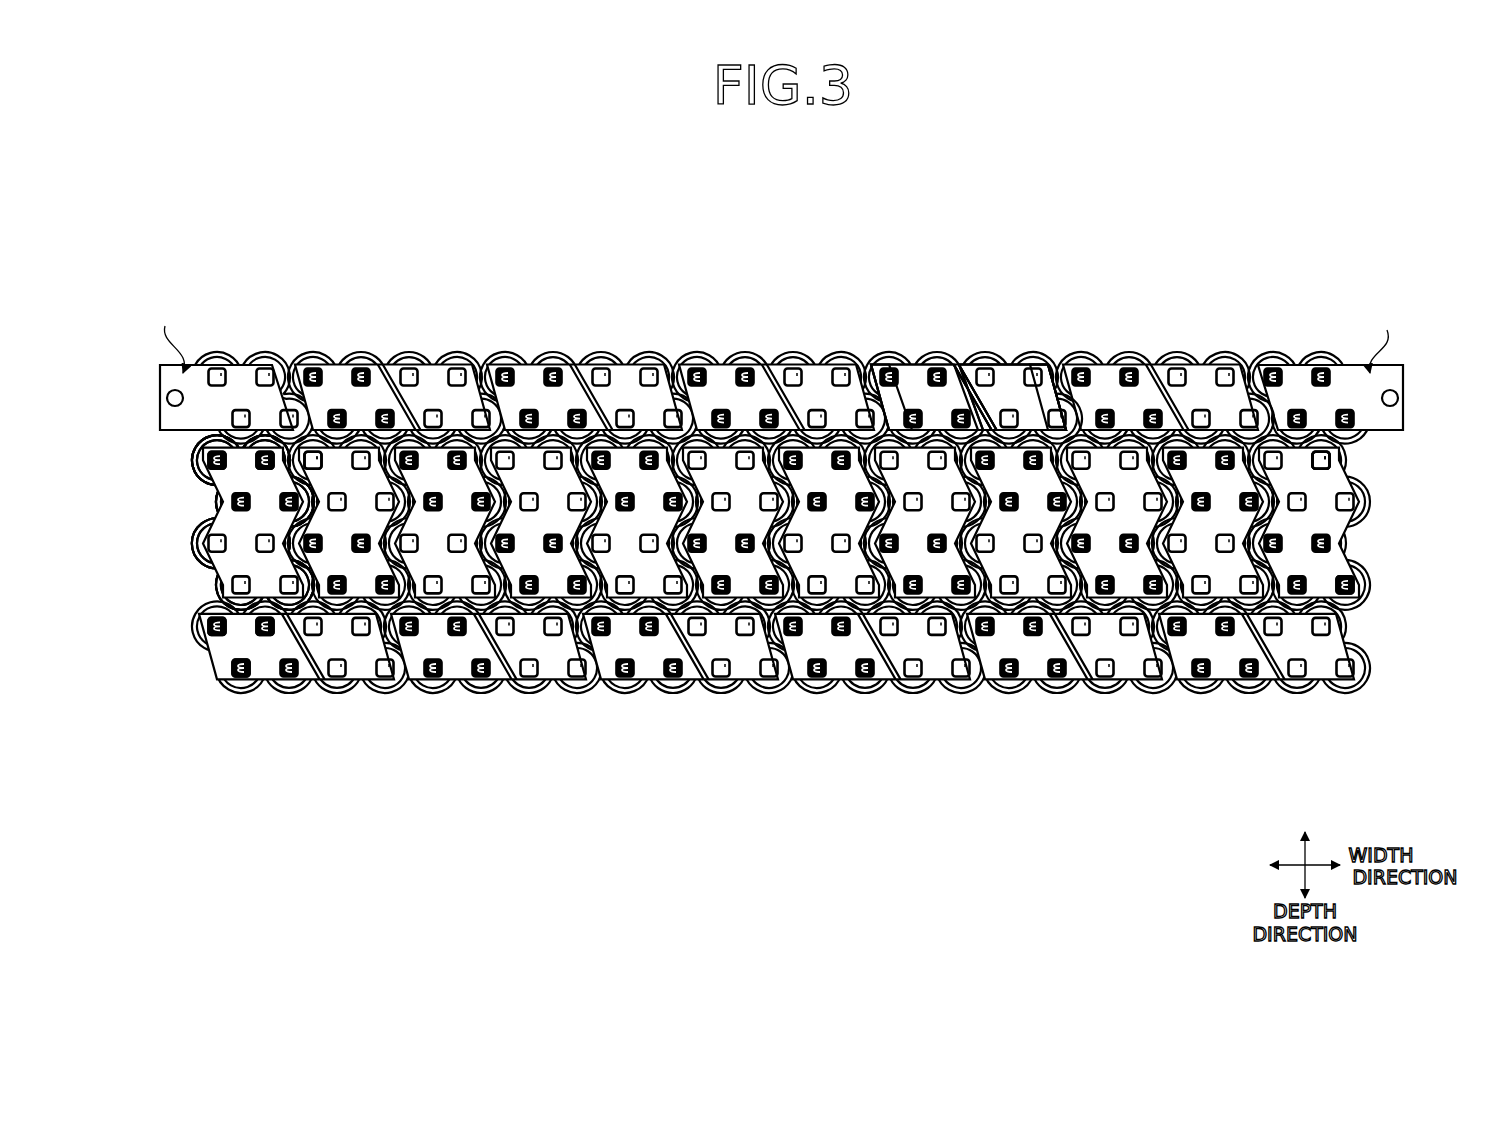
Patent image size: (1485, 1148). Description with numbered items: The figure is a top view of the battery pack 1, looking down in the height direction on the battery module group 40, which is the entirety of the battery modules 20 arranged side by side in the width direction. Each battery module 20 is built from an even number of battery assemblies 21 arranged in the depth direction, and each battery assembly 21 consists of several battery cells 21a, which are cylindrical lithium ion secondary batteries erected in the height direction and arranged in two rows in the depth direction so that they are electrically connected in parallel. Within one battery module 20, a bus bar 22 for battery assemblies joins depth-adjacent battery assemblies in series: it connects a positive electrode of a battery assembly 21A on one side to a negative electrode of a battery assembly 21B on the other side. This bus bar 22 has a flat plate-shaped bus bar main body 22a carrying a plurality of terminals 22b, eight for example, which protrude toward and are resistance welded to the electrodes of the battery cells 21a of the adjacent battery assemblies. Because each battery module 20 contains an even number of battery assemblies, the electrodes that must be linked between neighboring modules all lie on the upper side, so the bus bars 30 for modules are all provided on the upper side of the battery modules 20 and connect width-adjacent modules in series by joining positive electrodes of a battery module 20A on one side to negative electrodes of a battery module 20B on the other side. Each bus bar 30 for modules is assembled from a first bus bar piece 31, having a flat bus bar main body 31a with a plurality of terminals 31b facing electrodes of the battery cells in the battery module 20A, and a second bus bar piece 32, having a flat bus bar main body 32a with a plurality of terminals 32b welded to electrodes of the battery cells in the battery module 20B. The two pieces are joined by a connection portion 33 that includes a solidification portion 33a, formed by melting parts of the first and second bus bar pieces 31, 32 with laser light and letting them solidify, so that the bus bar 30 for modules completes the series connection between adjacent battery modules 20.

The battery pack 1 is at (784, 522).
The battery module group 40 is at (784, 522).
The battery module 20 is at (781, 599).
The battery module on one side 20A is at (1085, 700).
The battery module on the other side 20B is at (990, 700).
The battery assembly 21 is at (205, 536).
The battery assembly on one side 21A is at (203, 570).
The battery assembly on the other side 21B is at (192, 484).
The battery cell 21a is at (195, 468).
The bus bar for battery assemblies 22 is at (795, 475).
The bus bar main body 22a is at (318, 445).
The terminal 22b is at (241, 494).
The bus bar for modules 30 is at (781, 522).
The first bus bar piece 31 is at (935, 368).
The bus bar main body 31a is at (615, 525).
The terminal 31b is at (962, 372).
The second bus bar piece 32 is at (973, 368).
The bus bar main body 32a is at (719, 525).
The terminal 32b is at (1043, 395).
The connection portion 33 is at (960, 368).
The solidification portion 33a is at (845, 186).